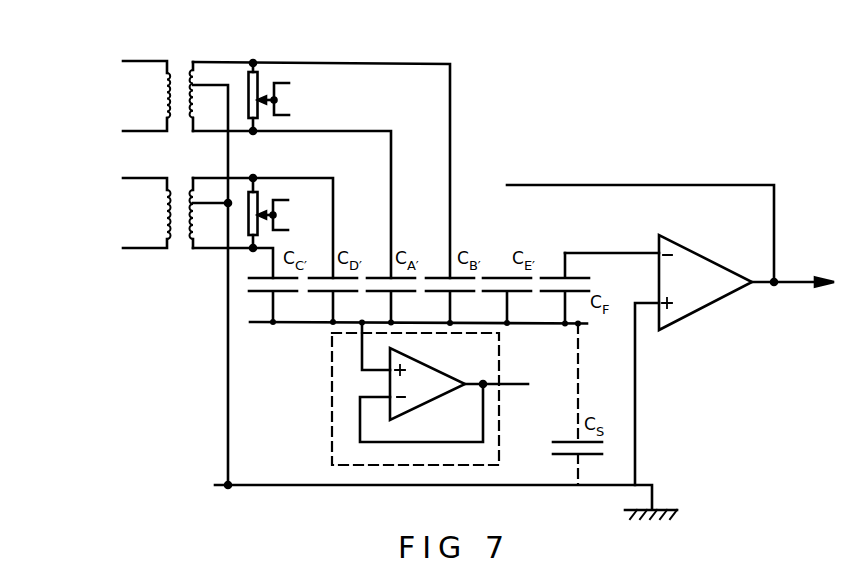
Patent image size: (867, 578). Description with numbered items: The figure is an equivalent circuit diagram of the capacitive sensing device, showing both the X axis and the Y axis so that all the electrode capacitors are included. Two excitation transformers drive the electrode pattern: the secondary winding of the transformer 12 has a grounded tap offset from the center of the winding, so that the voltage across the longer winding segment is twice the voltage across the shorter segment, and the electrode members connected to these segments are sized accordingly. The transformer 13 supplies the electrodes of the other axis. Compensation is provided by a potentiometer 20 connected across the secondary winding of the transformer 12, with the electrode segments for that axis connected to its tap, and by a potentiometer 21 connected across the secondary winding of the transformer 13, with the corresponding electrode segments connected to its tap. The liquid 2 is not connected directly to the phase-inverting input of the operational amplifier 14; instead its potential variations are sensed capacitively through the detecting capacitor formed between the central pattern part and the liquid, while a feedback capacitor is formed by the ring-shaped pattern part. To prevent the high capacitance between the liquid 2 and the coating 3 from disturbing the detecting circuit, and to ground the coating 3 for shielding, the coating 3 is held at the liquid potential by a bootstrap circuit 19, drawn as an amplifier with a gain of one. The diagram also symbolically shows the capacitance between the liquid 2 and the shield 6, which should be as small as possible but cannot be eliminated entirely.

The transformer 12 is at (178, 72).
The transformer 13 is at (177, 228).
The potentiometer 20 is at (260, 90).
The potentiometer 21 is at (261, 203).
The liquid 2 is at (310, 325).
The coating 3 is at (508, 385).
The bootstrap circuit 19 is at (411, 394).
The operational amplifier 14 is at (692, 266).
The shield 6 is at (347, 486).